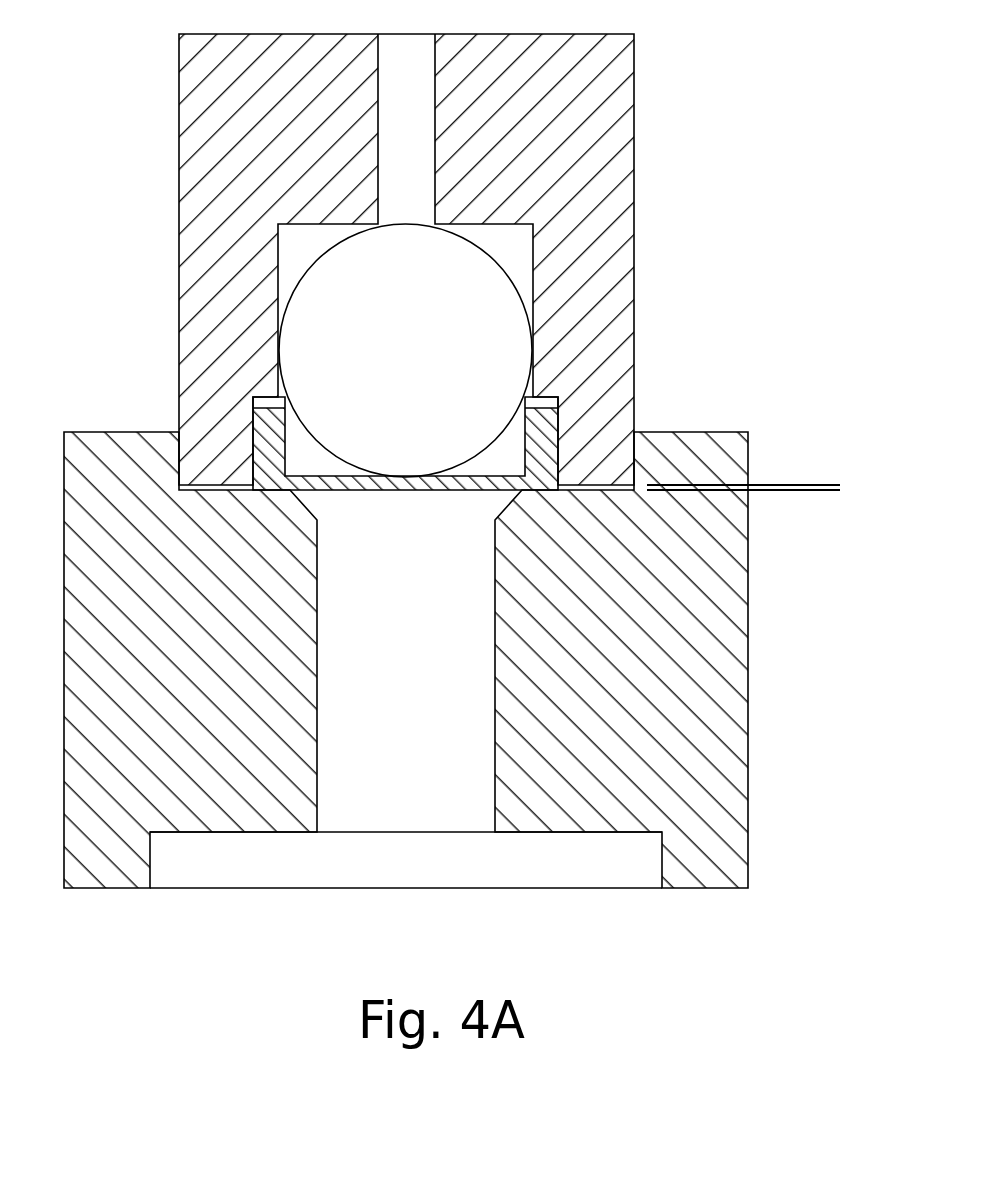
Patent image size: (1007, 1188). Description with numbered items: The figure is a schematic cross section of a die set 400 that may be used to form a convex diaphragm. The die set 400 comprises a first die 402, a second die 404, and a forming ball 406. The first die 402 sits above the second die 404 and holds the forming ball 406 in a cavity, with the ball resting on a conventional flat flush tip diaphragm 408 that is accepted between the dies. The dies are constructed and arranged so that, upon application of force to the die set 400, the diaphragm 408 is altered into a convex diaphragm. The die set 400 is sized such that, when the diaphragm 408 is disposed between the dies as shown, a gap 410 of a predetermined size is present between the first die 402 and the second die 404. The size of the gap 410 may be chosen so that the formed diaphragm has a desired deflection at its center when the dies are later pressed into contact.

The die set 400 is at (688, 200).
The first die 402 is at (227, 107).
The second die 404 is at (115, 507).
The forming ball 406 is at (378, 319).
The flat flush tip diaphragm 408 is at (490, 485).
The gap 410 is at (798, 501).